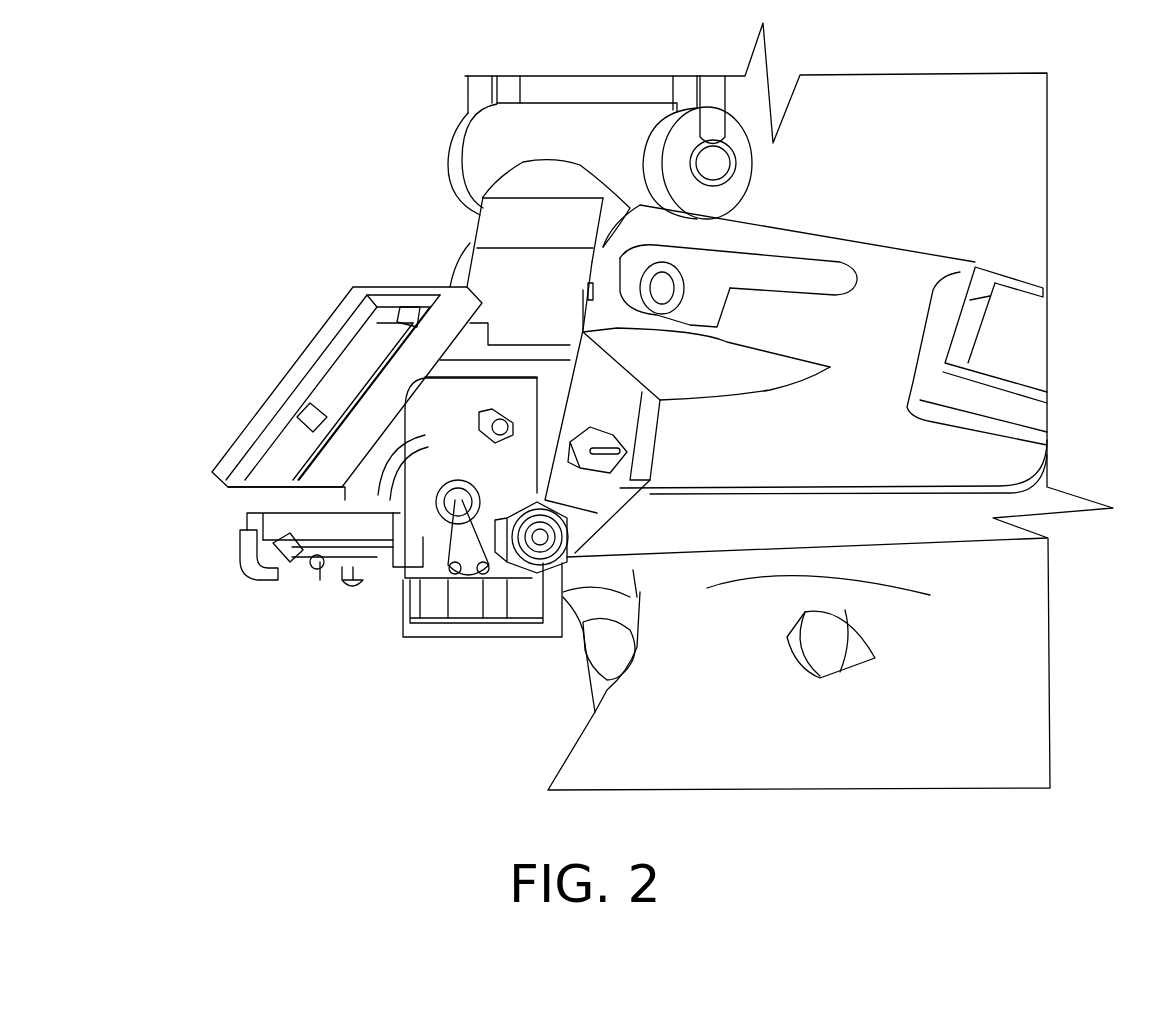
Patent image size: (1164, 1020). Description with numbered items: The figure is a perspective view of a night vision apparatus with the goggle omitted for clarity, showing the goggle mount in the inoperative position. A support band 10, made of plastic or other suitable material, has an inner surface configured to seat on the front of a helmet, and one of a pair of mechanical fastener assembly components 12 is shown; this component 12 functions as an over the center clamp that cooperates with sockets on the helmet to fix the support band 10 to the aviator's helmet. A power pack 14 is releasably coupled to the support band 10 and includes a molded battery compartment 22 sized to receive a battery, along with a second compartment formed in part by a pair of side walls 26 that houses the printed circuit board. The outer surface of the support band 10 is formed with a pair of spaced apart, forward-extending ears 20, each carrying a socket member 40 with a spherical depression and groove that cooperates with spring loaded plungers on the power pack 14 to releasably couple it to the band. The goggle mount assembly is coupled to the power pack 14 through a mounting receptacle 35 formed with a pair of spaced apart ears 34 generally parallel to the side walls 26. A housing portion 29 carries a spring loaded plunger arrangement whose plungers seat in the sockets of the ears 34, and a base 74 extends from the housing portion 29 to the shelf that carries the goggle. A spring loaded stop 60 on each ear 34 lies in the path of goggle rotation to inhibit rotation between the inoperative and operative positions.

The support band 10 is at (897, 263).
The mechanical fastener assembly component 12 is at (1020, 348).
The power pack 14 is at (470, 228).
The ear 20 is at (743, 243).
The battery compartment 22 is at (577, 113).
The side wall 26 is at (615, 224).
The housing portion 29 is at (330, 545).
The ear 34 is at (243, 557).
The mounting receptacle 35 is at (360, 547).
The socket member 40 is at (590, 300).
The spring loaded stop 60 is at (283, 547).
The base 74 is at (235, 453).